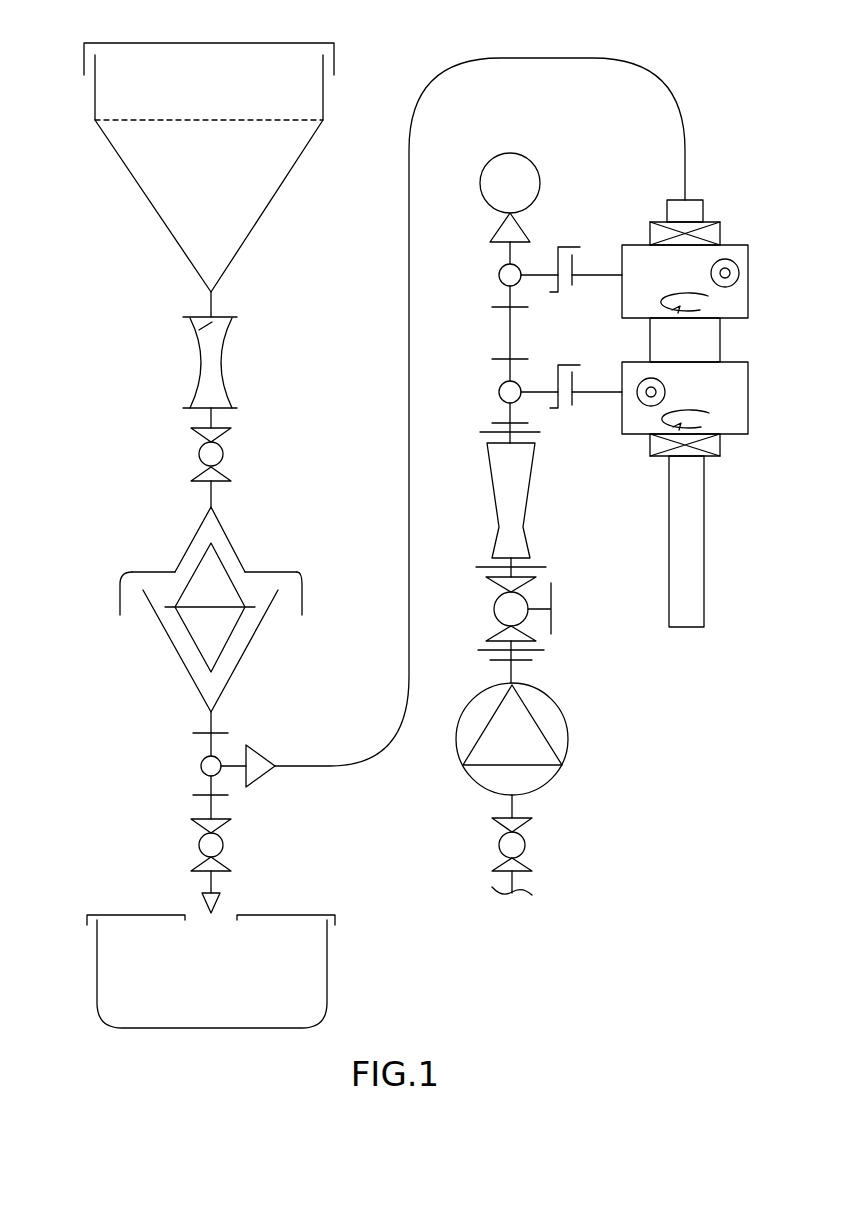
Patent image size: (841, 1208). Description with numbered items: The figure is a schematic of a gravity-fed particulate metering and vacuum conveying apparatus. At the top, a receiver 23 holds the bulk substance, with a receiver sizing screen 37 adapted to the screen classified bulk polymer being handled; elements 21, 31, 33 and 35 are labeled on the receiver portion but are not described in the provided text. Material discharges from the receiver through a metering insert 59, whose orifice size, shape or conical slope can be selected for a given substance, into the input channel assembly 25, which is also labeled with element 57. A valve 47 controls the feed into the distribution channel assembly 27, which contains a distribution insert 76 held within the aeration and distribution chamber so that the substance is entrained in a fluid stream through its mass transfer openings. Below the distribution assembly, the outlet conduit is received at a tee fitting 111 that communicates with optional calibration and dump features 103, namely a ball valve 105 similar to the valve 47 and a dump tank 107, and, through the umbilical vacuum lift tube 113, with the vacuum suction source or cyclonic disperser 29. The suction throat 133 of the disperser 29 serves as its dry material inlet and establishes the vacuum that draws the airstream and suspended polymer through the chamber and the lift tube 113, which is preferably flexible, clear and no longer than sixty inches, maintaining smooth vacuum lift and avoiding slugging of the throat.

The particulate material handling system 21 is at (147, 450).
The receiver 23 is at (100, 214).
The input channel assembly 25 is at (243, 385).
The distribution channel assembly 27 is at (121, 650).
The vacuum suction source (cyclonic disperser) 29 is at (610, 660).
The hopper outlet 31 is at (215, 287).
The hopper cover 33 is at (173, 50).
The hopper wall 35 is at (252, 200).
The receiver sizing screen 37 is at (268, 120).
The valve 47 is at (224, 455).
The venturi 57 is at (213, 358).
The metering insert 59 is at (191, 325).
The distribution insert 76 is at (237, 622).
The calibration and dump features 103 is at (146, 912).
The ball valve (calibration and dump valve) 105 is at (200, 850).
The dump tank 107 is at (307, 978).
The tee fitting 111 is at (200, 768).
The umbilical vacuum lift tube 113 is at (357, 755).
The suction throat (dry material inlet) 133 is at (692, 210).